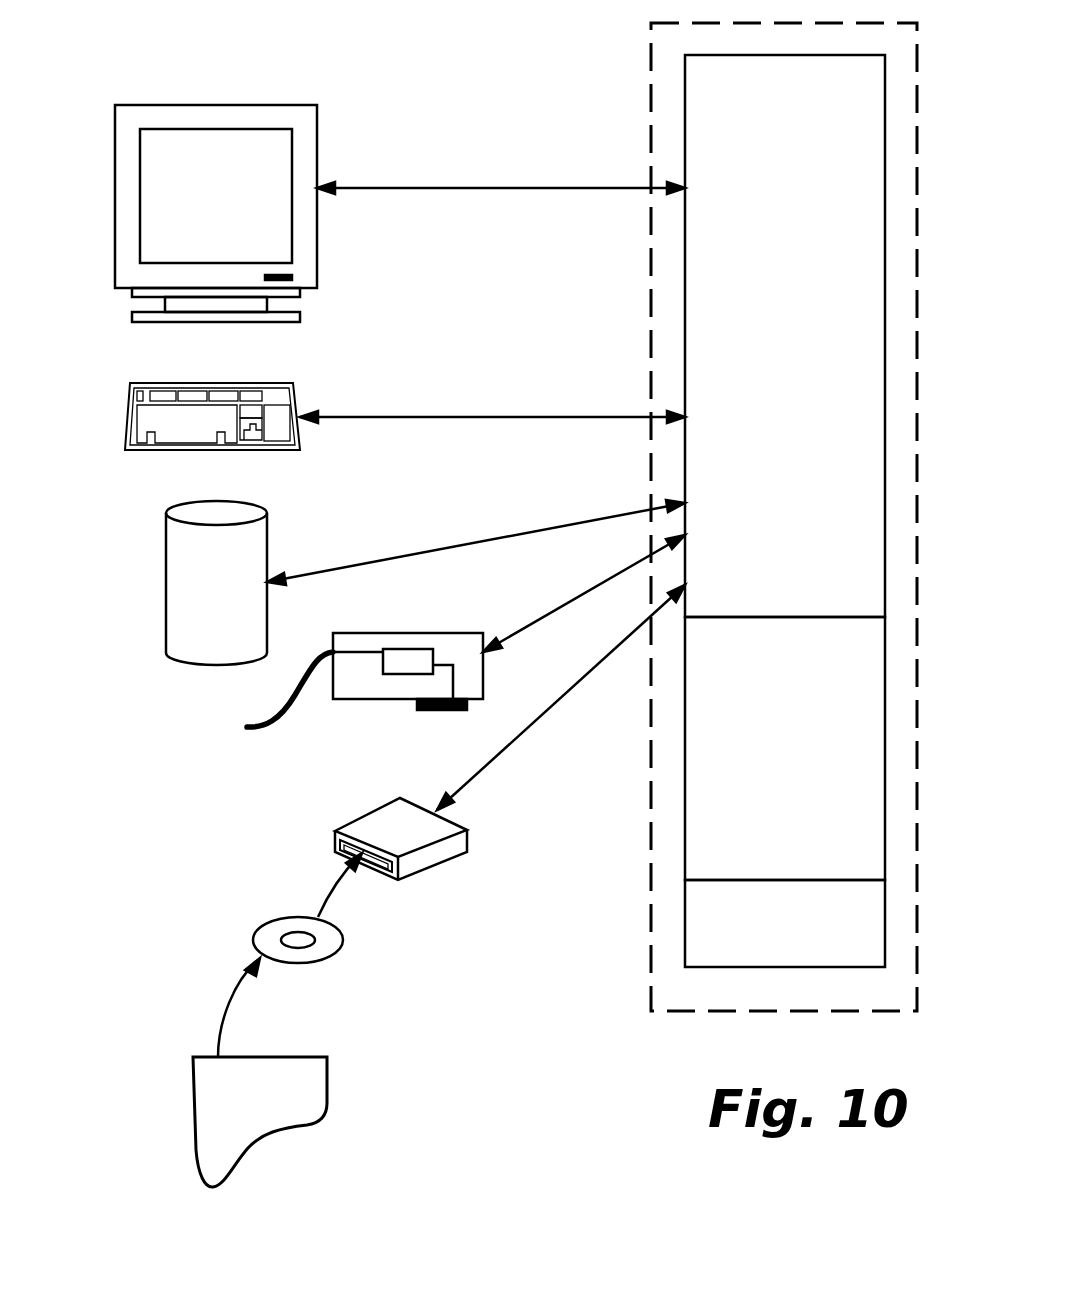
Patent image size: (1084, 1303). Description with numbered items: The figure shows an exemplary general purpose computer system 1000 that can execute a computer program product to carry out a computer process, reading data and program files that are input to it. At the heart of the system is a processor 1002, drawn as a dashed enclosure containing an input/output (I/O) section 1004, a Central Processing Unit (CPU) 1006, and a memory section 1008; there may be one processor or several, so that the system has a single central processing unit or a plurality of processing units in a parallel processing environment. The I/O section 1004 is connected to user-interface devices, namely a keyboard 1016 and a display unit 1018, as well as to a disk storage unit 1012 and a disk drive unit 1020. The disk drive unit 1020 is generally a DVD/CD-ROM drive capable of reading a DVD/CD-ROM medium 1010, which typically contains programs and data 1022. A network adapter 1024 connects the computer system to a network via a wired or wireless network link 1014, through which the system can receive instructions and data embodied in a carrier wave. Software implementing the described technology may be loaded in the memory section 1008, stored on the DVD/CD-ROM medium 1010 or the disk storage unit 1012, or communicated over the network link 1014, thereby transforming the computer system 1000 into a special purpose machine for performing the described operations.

The general purpose computer system 1000 is at (611, 1098).
The processor 1002 is at (651, 88).
The input/output (I/O) section 1004 is at (785, 336).
The Central Processing Unit (CPU) 1006 is at (785, 748).
The memory section 1008 is at (785, 923).
The DVD/CD-ROM medium 1010 is at (267, 920).
The disk storage unit 1012 is at (166, 535).
The network link 1014 is at (272, 727).
The keyboard 1016 is at (169, 383).
The display unit 1018 is at (180, 105).
The disk drive unit 1020 is at (383, 830).
The programs and data 1022 is at (330, 1078).
The network adapter 1024 is at (383, 699).